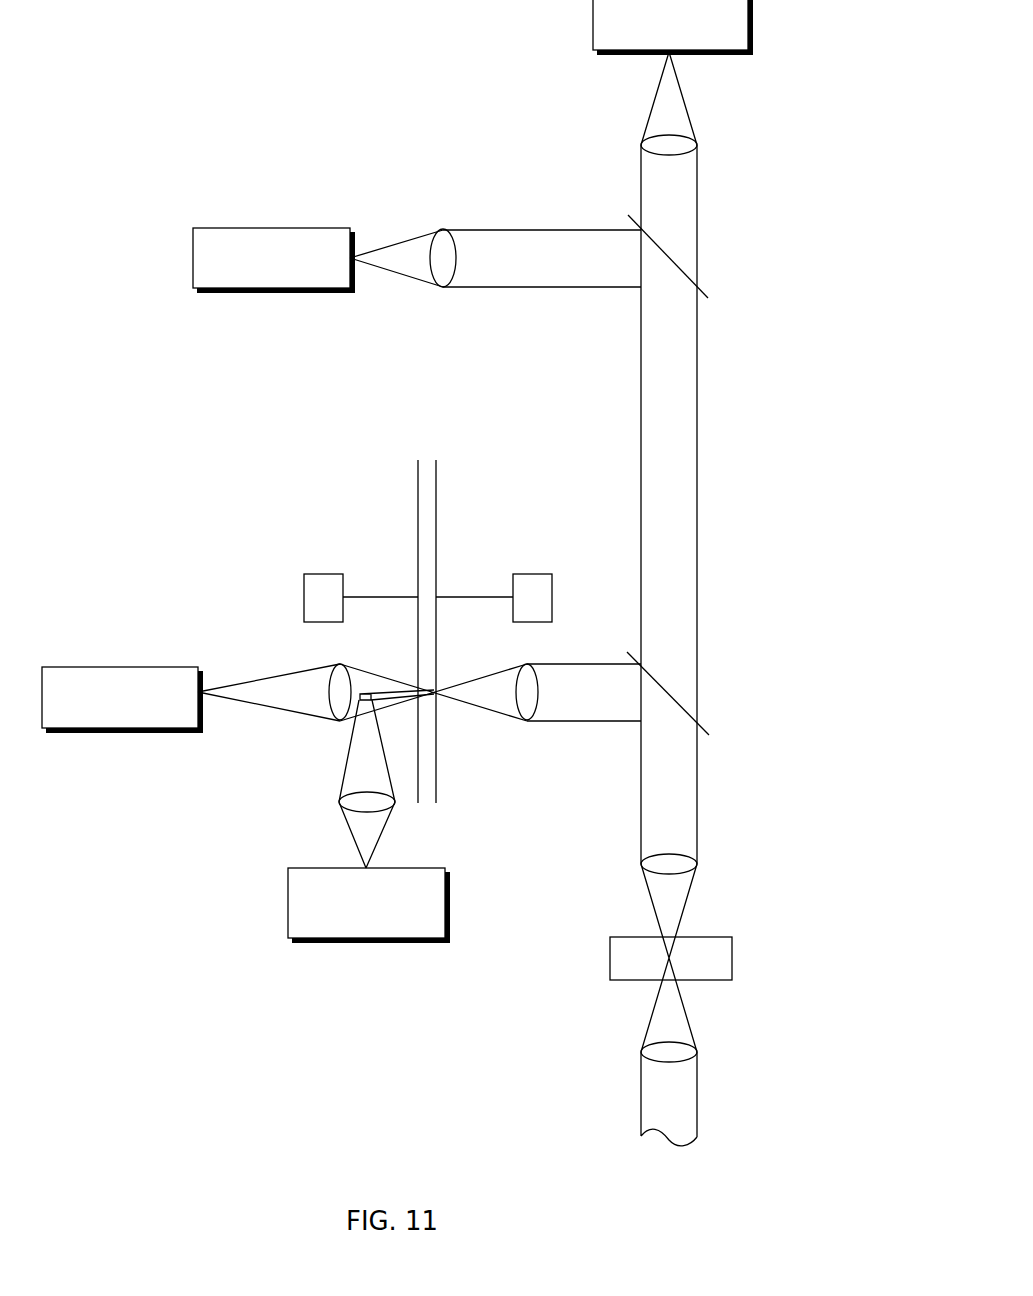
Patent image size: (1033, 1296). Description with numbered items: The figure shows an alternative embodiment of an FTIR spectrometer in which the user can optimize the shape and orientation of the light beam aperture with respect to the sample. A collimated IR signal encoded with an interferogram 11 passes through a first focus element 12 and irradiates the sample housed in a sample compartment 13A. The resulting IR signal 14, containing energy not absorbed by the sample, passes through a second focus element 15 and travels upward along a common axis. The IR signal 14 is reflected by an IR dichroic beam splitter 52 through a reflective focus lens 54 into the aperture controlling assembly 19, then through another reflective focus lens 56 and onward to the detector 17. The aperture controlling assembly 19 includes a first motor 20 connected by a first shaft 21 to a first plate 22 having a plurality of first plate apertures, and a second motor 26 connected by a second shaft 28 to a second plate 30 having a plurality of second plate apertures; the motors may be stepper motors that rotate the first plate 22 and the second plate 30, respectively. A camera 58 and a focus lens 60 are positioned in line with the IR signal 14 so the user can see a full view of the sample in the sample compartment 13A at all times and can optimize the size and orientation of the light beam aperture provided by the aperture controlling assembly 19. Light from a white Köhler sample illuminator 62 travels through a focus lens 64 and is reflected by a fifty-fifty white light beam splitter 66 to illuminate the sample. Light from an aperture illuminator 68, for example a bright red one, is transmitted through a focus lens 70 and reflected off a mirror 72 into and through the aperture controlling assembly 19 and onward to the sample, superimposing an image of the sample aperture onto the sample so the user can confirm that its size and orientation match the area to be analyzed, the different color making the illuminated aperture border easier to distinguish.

The camera 58 is at (753, 36).
The focus lens 60 is at (698, 145).
The white Köhler sample illuminator 62 is at (283, 227).
The focus lens 64 is at (450, 229).
The 50/50 white light beam splitter 66 is at (708, 298).
The aperture controlling assembly 19 is at (340, 450).
The second plate 30 is at (437, 508).
The first plate 22 is at (418, 540).
The first shaft 21 is at (366, 597).
The second shaft 28 is at (458, 597).
The second motor 26 is at (552, 585).
The first motor 20 is at (304, 600).
The detector 17 is at (98, 666).
The mirror 72 is at (370, 694).
The reflective focus lens 56 is at (338, 722).
The reflective focus lens 54 is at (524, 722).
The focus lens 70 is at (339, 802).
The aperture illuminator 68 is at (450, 913).
The IR dichroic beam splitter 52 is at (709, 735).
The IR signal 14 is at (698, 806).
The second focus element 15 is at (698, 864).
The sample compartment 13A is at (732, 958).
The first focus element 12 is at (698, 1052).
The interferogram 11 is at (687, 1110).